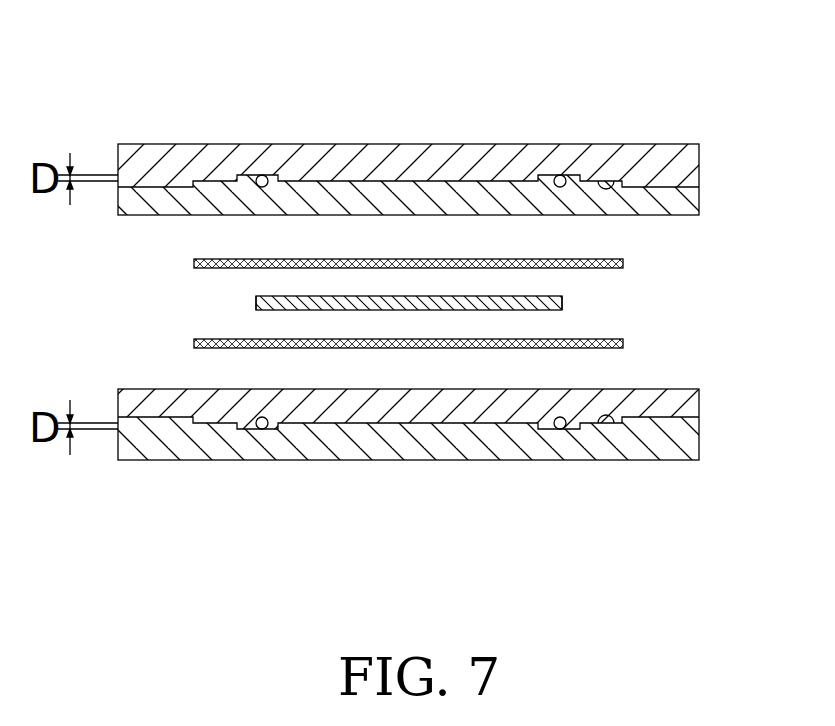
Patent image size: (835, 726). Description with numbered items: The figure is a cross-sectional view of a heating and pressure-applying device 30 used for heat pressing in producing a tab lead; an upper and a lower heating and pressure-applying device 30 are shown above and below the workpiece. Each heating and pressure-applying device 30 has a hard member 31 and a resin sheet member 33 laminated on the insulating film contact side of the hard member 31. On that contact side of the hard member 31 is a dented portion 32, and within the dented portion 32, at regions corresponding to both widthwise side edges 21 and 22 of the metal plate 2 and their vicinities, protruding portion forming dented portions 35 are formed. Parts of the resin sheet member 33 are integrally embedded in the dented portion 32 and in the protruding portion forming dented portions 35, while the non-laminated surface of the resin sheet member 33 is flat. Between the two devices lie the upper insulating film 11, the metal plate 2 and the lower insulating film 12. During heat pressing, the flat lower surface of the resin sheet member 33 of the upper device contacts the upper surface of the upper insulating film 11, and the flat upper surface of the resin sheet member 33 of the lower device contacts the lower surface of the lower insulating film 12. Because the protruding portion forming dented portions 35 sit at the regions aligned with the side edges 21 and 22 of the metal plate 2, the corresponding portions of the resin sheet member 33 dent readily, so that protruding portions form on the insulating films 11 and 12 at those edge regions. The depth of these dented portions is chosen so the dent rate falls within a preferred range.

The heating and pressure-applying device 30 is at (663, 153).
The hard member 31 is at (688, 160).
The resin sheet member 33 is at (688, 202).
The dented portion 32 is at (610, 179).
The protruding portion forming dented portion 35 is at (258, 176).
The upper insulating film 11 is at (623, 262).
The lower insulating film 12 is at (623, 343).
The metal plate 2 is at (565, 297).
The widthwise side edge 21 is at (256, 303).
The widthwise side edge 22 is at (565, 302).